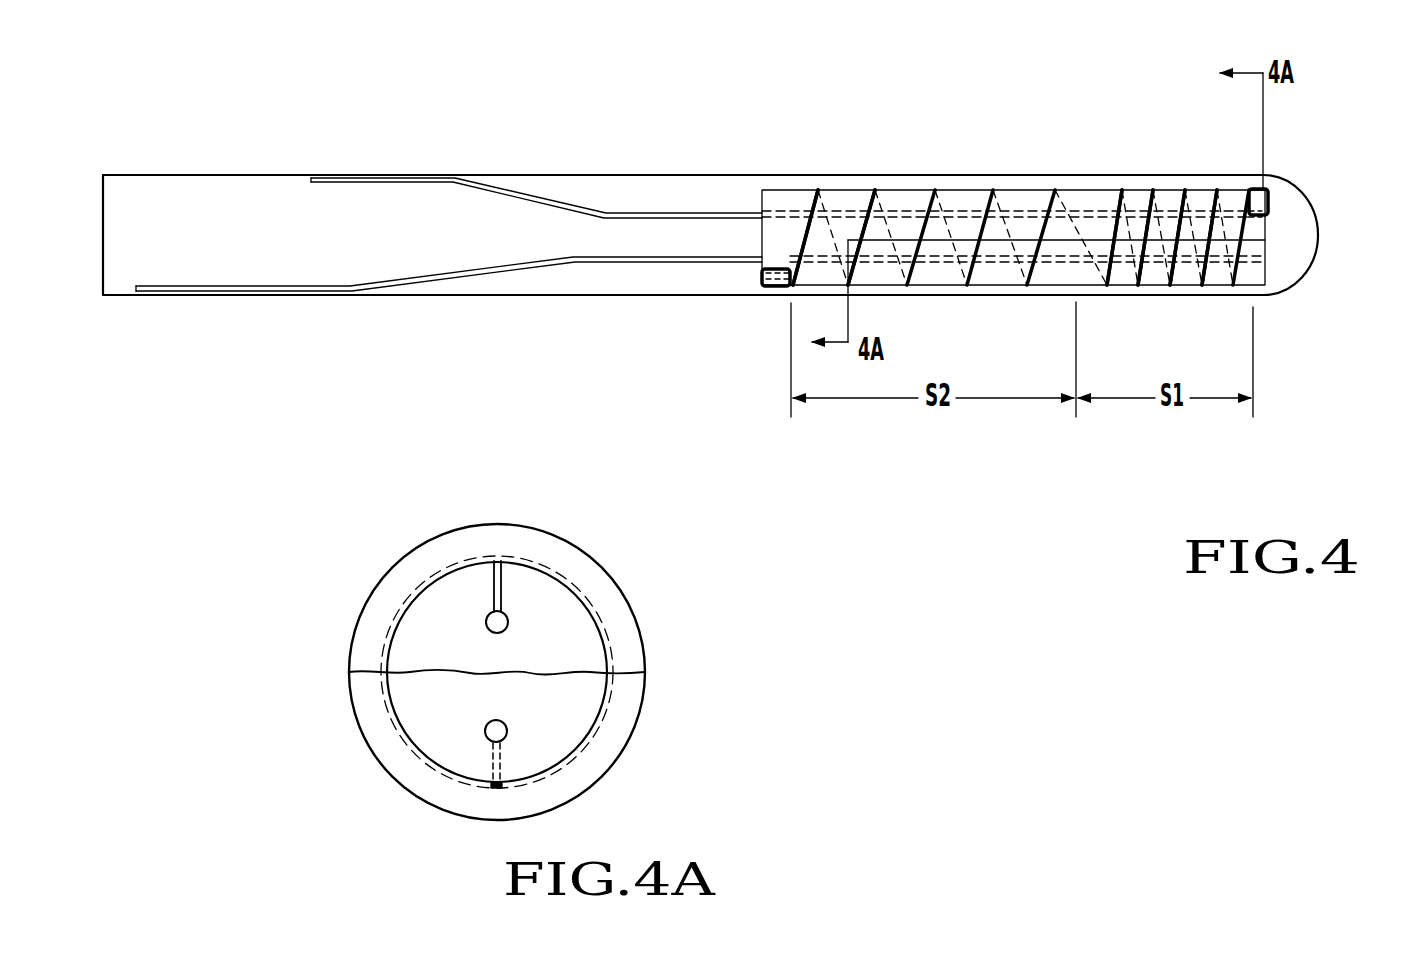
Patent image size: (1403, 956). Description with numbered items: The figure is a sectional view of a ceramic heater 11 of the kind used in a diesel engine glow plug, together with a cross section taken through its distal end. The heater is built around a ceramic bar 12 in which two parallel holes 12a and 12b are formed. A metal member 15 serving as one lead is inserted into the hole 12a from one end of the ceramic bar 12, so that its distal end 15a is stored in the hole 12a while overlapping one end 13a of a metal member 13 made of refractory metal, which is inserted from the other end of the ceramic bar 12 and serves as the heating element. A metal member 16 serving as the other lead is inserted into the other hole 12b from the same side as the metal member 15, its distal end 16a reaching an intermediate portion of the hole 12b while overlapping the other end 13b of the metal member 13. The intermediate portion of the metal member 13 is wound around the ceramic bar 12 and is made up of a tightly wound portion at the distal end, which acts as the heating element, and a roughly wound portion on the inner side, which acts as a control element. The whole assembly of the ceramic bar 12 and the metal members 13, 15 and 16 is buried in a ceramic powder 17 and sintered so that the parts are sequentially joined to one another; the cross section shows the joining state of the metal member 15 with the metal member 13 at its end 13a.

In FIG. 4, the ceramic heater 11 is at (895, 138).
In FIG. 4, the ceramic bar 12 is at (1103, 190).
In FIG. 4, the hole 12a is at (1073, 180).
In FIG. 4, the hole 12b is at (1046, 296).
In FIG. 4, the metal member 13 is at (1178, 190).
In FIG. 4A, the metal member 13 is at (508, 612).
In FIG. 4, the one end of metal member 13a is at (1268, 197).
In FIG. 4, the other end of metal member 13b is at (768, 298).
In FIG. 4, the metal member 15 is at (592, 213).
In FIG. 4A, the metal member 15 is at (487, 617).
In FIG. 4, the distal end of metal member 15a is at (1267, 222).
In FIG. 4, the metal member 16 is at (627, 296).
In FIG. 4A, the metal member 16 is at (510, 727).
In FIG. 4, the distal end of metal member 16a is at (775, 297).
In FIG. 4, the ceramic powder 17 is at (718, 190).